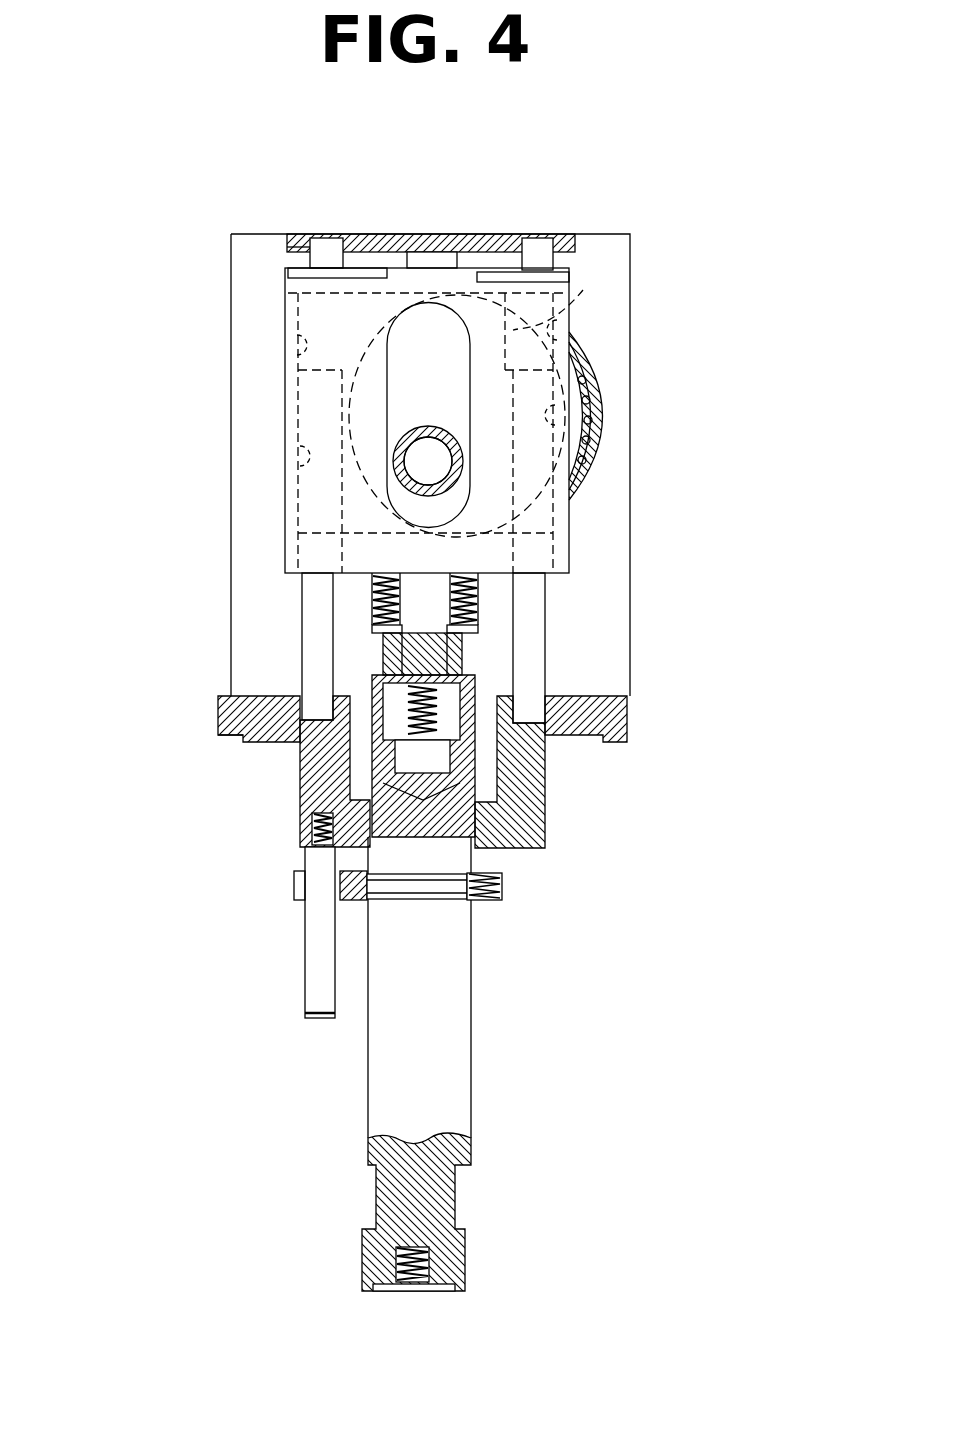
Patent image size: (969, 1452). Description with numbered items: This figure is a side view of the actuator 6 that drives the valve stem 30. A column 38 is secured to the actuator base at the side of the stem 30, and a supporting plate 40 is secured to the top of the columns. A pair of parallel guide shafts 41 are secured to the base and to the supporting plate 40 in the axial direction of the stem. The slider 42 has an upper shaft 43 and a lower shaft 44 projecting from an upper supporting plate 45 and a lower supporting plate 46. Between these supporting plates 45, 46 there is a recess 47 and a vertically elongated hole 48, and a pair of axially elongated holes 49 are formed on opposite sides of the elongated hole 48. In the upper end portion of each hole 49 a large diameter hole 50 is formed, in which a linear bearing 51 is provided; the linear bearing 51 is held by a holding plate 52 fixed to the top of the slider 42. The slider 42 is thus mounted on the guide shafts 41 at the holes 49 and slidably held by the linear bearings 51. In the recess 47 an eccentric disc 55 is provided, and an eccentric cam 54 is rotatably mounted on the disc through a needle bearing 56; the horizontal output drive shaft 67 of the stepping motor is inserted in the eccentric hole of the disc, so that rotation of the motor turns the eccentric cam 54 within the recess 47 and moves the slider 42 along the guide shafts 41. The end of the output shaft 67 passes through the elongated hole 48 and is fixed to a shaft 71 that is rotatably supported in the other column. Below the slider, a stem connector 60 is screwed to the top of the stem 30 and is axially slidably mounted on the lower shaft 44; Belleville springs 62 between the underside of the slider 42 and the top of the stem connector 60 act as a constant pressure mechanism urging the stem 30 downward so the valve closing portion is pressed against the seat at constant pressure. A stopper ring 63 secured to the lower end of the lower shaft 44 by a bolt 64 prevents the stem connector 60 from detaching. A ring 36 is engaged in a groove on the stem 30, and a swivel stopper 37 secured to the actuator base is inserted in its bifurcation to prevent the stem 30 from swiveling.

The actuator 6 is at (627, 723).
The stem 30 is at (470, 1090).
The ring 36 is at (502, 902).
The swivel stopper 37 is at (305, 977).
The column 38 is at (634, 258).
The supporting plate 40 is at (492, 233).
The guide shafts 41 is at (302, 624).
The slider 42 is at (595, 558).
The upper shaft 43 is at (419, 252).
The lower shaft 44 is at (473, 667).
The upper supporting plate 45 is at (583, 290).
The lower supporting plate 46 is at (283, 549).
The recess 47 is at (560, 520).
The elongated hole 48 is at (405, 378).
The axially elongated holes 49 is at (600, 372).
The large diameter hole 50 is at (578, 322).
The linear bearing 51 is at (565, 350).
The holding plate 52 is at (292, 264).
The eccentric cam 54 is at (624, 445).
The eccentric disc 55 is at (605, 408).
The needle bearing 56 is at (592, 480).
The stem connector 60 is at (218, 727).
The Belleville springs 62 is at (372, 632).
The stopper ring 63 is at (332, 778).
The bolt 64 is at (487, 797).
The output drive shaft 67 is at (407, 510).
The shaft 71 is at (422, 476).